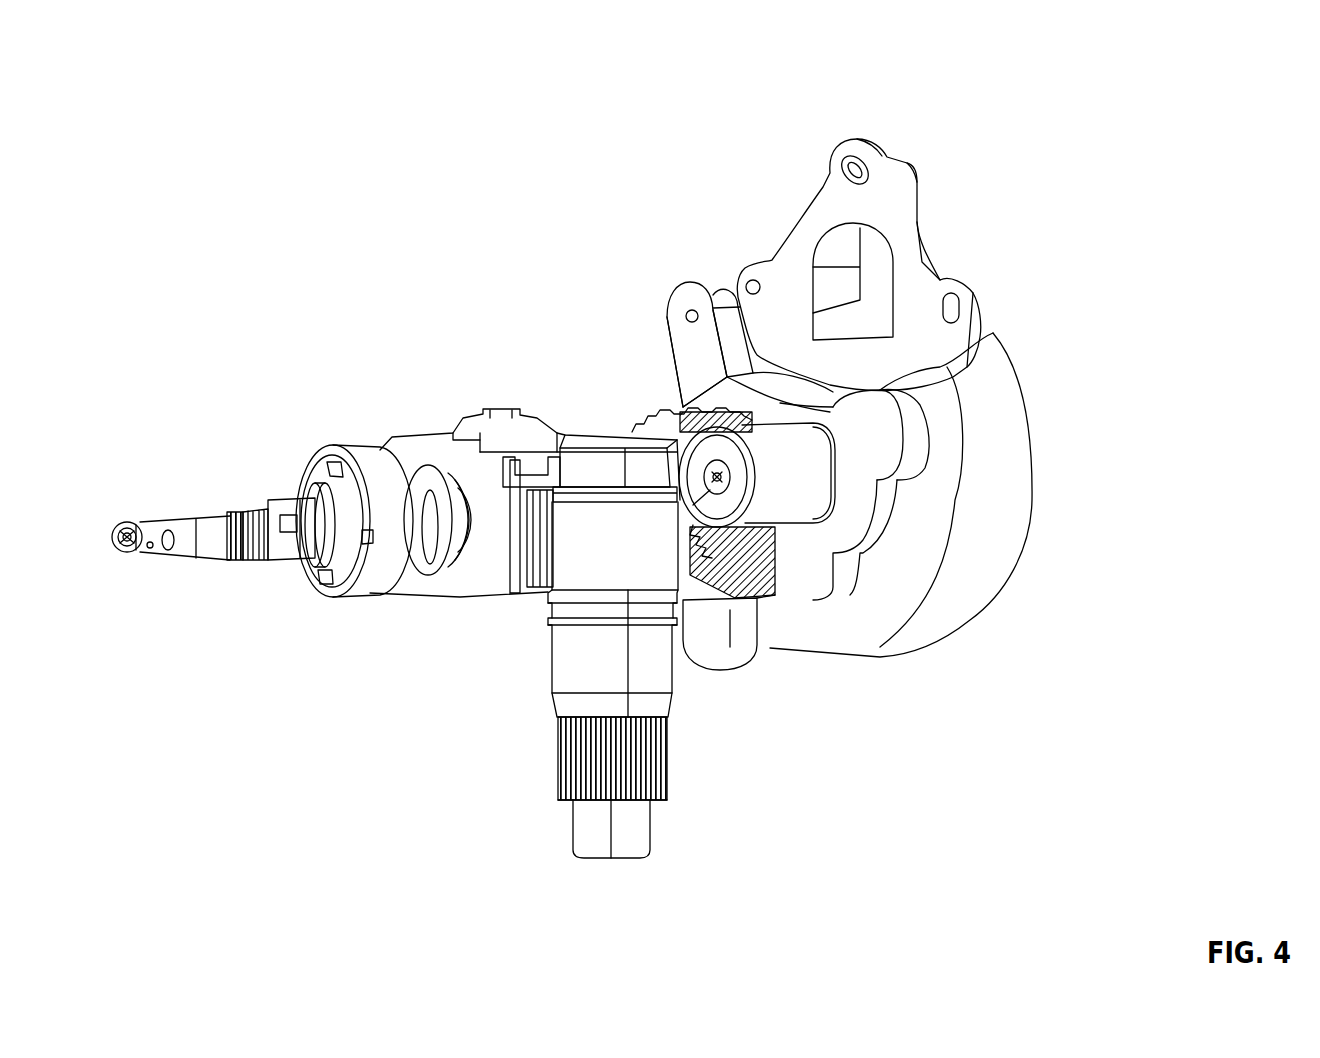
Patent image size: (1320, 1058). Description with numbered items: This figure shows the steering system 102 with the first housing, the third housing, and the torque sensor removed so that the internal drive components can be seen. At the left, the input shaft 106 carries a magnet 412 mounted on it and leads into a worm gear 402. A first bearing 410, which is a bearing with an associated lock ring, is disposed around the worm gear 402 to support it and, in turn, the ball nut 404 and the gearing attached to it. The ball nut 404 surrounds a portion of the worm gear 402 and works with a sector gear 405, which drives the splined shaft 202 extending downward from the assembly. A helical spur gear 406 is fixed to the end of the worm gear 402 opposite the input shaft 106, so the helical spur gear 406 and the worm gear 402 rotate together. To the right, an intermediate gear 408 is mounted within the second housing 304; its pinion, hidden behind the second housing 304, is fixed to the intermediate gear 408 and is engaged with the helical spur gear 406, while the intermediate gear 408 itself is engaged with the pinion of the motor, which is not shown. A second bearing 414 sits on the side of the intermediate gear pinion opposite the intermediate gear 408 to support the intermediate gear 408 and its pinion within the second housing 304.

The steering system 102 is at (1050, 72).
The input shaft 106 is at (132, 515).
The splined shaft 202 is at (683, 758).
The second housing 304 is at (1018, 362).
The worm gear 402 is at (280, 497).
The ball nut 404 is at (388, 446).
The sector gear 405 is at (545, 595).
The helical spur gear 406 is at (647, 413).
The intermediate gear 408 is at (815, 329).
The first bearing 410 is at (352, 598).
The magnet 412 is at (288, 534).
The second bearing 414 is at (680, 531).